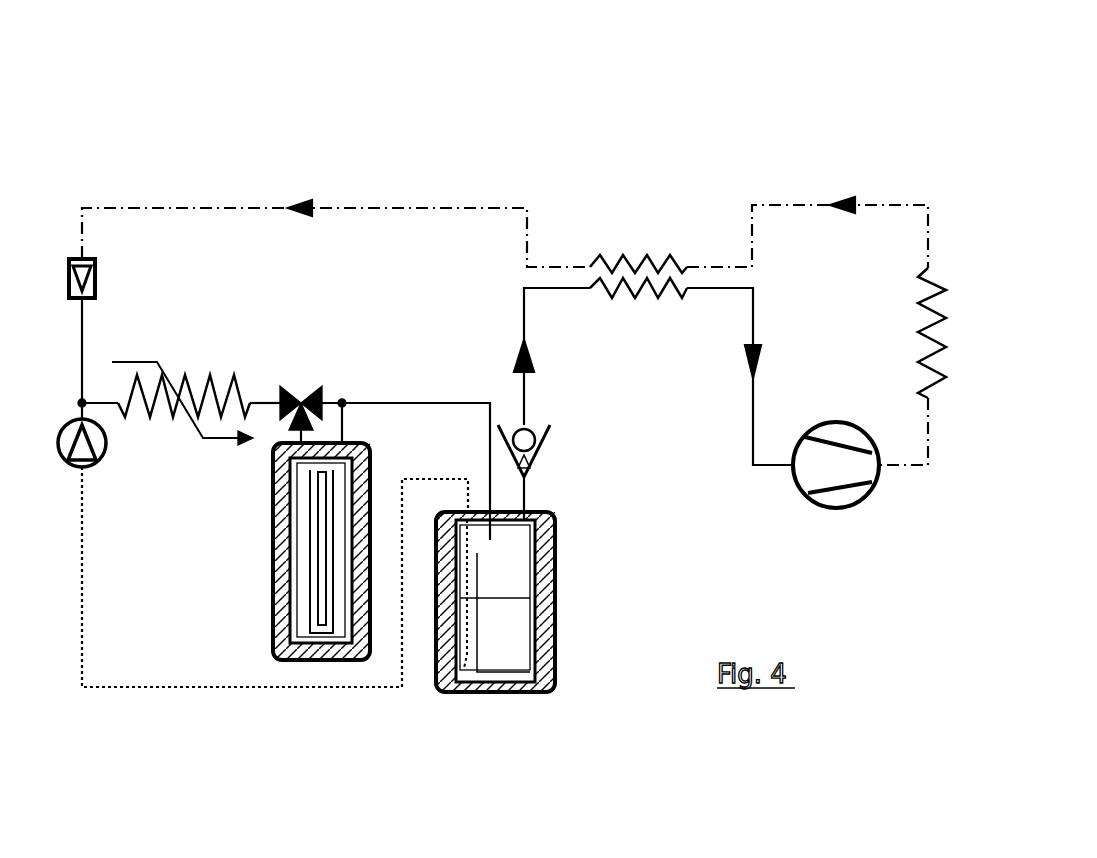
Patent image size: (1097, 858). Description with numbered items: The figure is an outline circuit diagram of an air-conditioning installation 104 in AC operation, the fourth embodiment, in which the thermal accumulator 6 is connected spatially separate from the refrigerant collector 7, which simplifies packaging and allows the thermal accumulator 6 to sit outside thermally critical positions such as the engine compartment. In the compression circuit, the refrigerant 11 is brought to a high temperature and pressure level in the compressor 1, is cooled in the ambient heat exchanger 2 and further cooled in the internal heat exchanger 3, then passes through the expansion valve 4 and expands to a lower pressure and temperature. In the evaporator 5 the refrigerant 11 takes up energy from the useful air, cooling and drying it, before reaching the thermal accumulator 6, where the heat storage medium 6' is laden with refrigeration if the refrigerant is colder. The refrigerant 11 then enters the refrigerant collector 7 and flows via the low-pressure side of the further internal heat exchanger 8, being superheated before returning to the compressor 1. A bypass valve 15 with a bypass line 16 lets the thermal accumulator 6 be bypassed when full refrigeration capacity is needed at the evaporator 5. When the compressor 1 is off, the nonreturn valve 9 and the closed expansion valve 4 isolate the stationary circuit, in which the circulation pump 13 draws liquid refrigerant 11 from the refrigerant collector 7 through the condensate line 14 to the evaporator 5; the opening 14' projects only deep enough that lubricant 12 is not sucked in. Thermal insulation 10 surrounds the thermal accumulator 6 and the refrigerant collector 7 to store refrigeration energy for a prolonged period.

The air-conditioning installation 104 is at (815, 127).
The compressor 1 is at (812, 500).
The ambient heat exchanger 2 is at (925, 293).
The internal heat exchanger 3 is at (628, 258).
The expansion valve 4 is at (94, 257).
The evaporator 5 is at (188, 383).
The thermal accumulator 6 is at (317, 618).
The heat storage medium 6' is at (256, 551).
The refrigerant collector 7 is at (557, 560).
The further internal heat exchanger 8 is at (635, 293).
The nonreturn valve 9 is at (542, 442).
The thermal insulation 10 is at (357, 660).
The refrigerant 11 is at (502, 640).
The lubricant 12 is at (467, 693).
The circulation pump 13 is at (93, 468).
The condensate line 14 is at (275, 633).
The opening of the condensate line 14' is at (426, 664).
The bypass valve 15 is at (301, 397).
The bypass line 16 is at (328, 398).